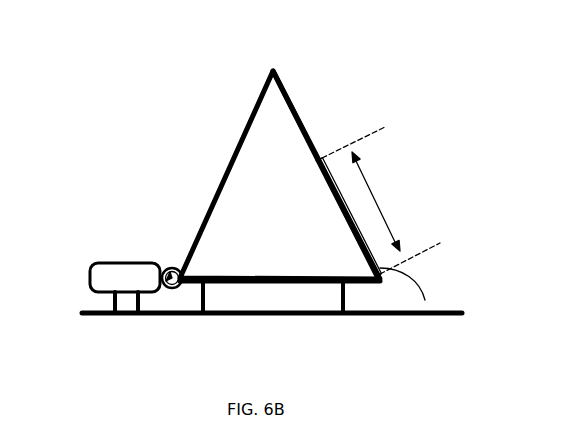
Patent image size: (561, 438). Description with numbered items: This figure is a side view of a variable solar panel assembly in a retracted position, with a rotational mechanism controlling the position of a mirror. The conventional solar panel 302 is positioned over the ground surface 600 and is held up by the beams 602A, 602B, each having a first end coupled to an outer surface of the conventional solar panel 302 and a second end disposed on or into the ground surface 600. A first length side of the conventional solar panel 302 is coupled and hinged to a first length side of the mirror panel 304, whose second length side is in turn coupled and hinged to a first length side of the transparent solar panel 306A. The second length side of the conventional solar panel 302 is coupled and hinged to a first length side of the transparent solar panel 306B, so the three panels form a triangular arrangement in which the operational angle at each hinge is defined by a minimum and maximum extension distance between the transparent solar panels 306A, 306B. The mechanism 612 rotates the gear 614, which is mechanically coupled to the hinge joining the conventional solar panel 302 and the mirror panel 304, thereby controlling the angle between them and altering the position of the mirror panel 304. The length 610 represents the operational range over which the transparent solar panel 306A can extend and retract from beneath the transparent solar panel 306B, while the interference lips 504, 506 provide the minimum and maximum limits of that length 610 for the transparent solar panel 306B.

The conventional solar panel 302 is at (262, 283).
The mirror panel 304 is at (245, 123).
The transparent solar panel 306A is at (283, 80).
The transparent solar panel 306B is at (338, 190).
The interference lip 504 is at (425, 300).
The interference lip 506 is at (320, 162).
The ground surface 600 is at (455, 311).
The beam 602A is at (202, 297).
The beam 602B is at (345, 297).
The length 610 is at (400, 222).
The mechanism 612 is at (90, 276).
The gear 614 is at (167, 266).